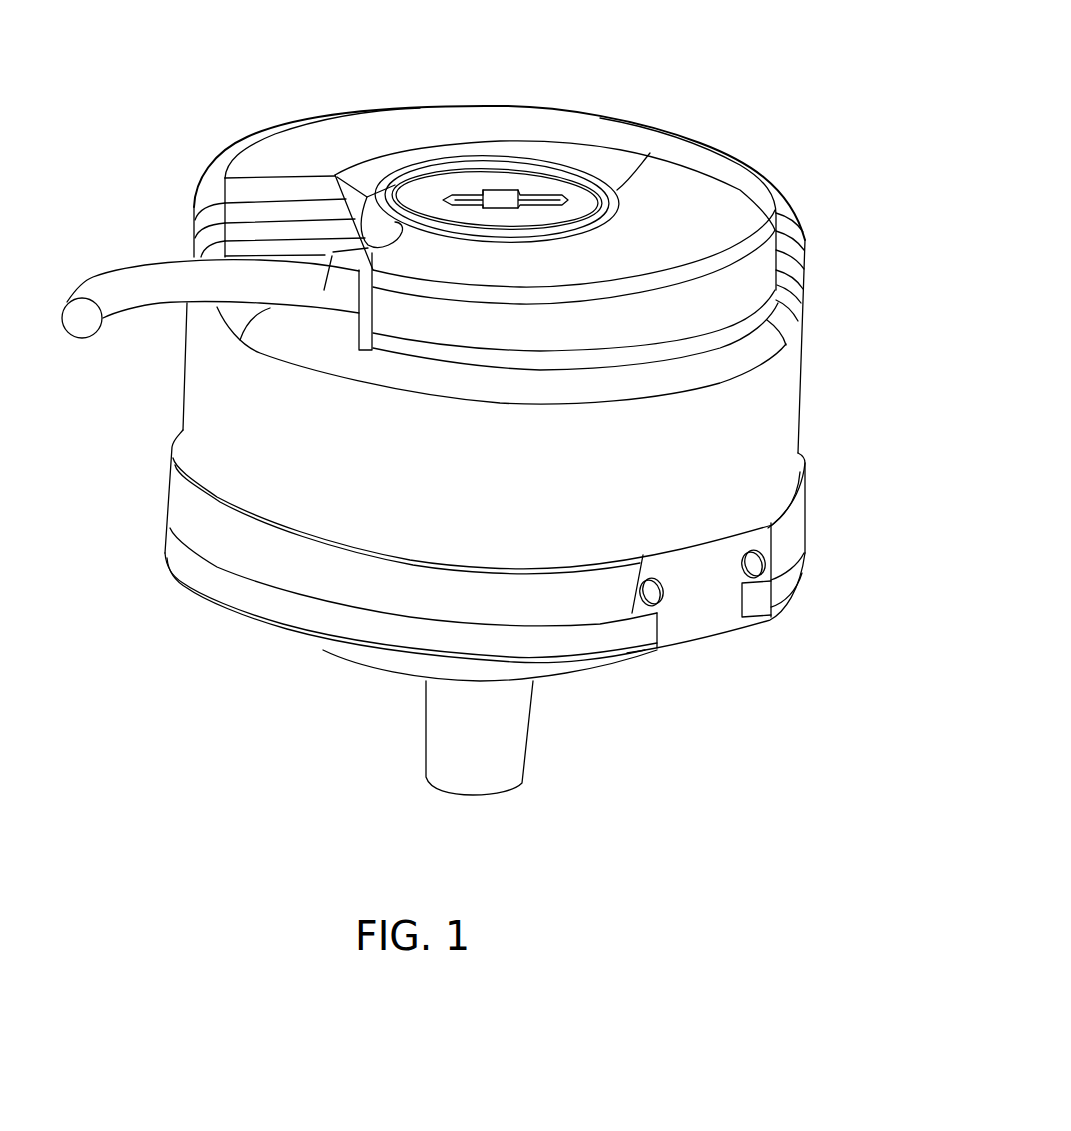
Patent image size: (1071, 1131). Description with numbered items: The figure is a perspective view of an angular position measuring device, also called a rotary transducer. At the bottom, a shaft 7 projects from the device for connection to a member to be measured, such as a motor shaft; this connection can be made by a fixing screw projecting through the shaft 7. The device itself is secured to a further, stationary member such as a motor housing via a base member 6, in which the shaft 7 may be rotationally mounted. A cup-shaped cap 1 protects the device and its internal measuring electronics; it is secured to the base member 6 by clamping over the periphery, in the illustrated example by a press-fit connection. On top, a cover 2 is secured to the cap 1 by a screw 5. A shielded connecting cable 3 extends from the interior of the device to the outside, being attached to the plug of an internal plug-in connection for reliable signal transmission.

The cap 1 is at (775, 398).
The cover 2 is at (700, 225).
The connecting cable 3 is at (143, 279).
The screw 5 is at (553, 183).
The base member 6 is at (792, 533).
The shaft 7 is at (500, 740).